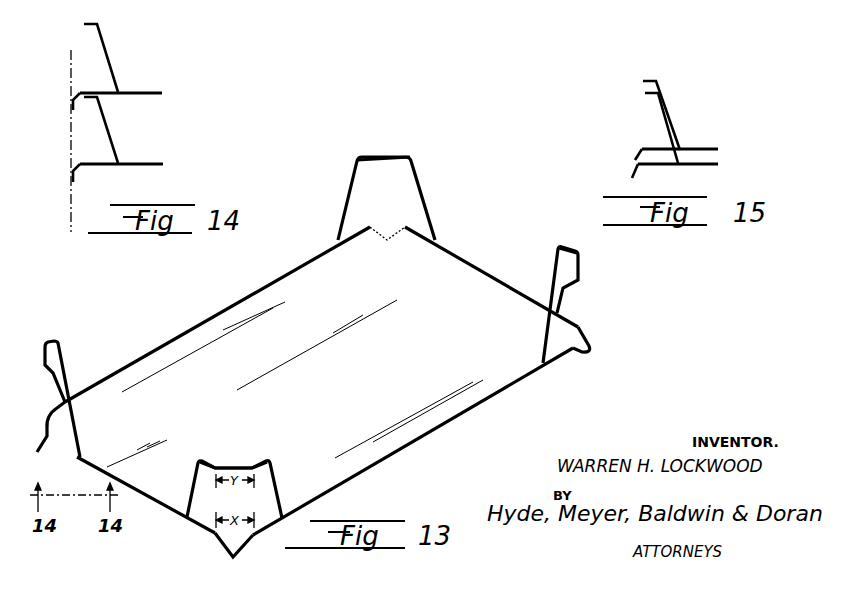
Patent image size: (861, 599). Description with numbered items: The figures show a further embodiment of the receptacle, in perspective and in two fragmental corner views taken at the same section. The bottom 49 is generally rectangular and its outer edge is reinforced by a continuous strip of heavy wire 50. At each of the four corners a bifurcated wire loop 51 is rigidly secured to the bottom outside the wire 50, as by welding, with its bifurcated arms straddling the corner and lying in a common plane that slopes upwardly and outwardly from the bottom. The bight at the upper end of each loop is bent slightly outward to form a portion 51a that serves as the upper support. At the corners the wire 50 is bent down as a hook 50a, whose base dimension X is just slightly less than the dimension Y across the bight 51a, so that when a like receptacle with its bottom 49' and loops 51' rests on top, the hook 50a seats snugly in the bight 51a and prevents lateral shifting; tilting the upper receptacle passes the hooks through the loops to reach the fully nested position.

In FIG. 13, the bottom 49 is at (321, 347).
In FIG. 14, the bottom 49 is at (118, 158).
In FIG. 15, the bottom 49 is at (695, 163).
In FIG. 14, the bottom of like receptacle 49' is at (117, 84).
In FIG. 15, the bottom of like receptacle 49' is at (683, 138).
In FIG. 13, the heavy wire 50 is at (440, 431).
In FIG. 13, the hook 50a is at (229, 553).
In FIG. 13, the bifurcated wire loop 51 is at (311, 337).
In FIG. 14, the bifurcated wire loop 51 is at (111, 130).
In FIG. 15, the bifurcated wire loop 51 is at (655, 128).
In FIG. 14, the bifurcated wire loop of like receptacle 51' is at (110, 58).
In FIG. 15, the bifurcated wire loop of like receptacle 51' is at (671, 114).
In FIG. 13, the bight portion 51a is at (393, 159).